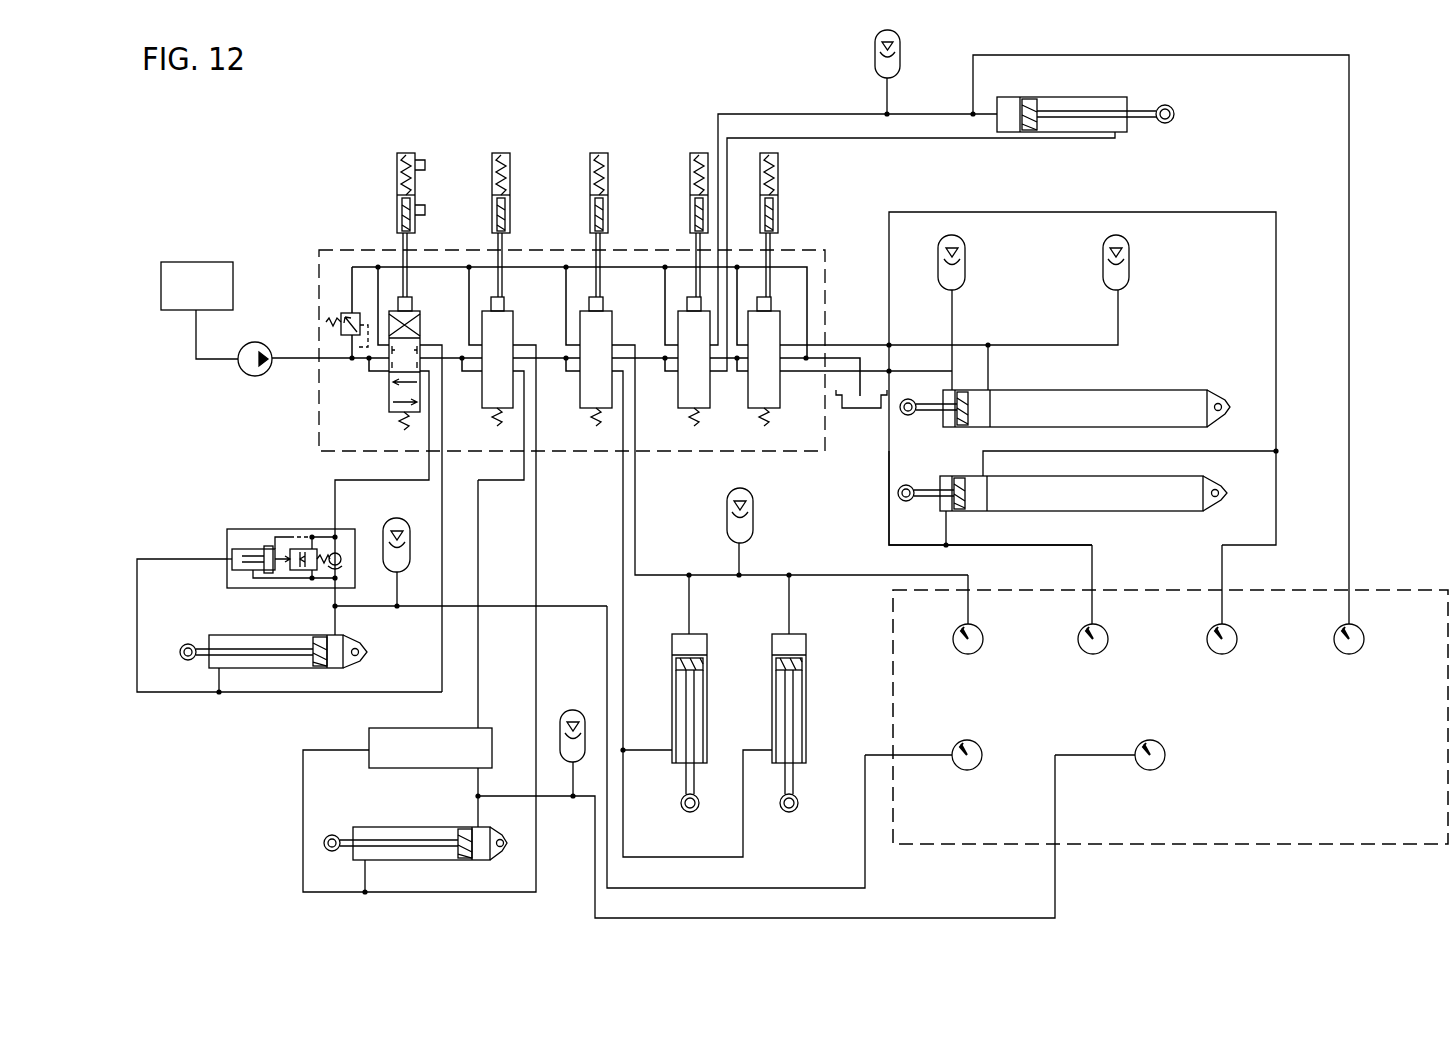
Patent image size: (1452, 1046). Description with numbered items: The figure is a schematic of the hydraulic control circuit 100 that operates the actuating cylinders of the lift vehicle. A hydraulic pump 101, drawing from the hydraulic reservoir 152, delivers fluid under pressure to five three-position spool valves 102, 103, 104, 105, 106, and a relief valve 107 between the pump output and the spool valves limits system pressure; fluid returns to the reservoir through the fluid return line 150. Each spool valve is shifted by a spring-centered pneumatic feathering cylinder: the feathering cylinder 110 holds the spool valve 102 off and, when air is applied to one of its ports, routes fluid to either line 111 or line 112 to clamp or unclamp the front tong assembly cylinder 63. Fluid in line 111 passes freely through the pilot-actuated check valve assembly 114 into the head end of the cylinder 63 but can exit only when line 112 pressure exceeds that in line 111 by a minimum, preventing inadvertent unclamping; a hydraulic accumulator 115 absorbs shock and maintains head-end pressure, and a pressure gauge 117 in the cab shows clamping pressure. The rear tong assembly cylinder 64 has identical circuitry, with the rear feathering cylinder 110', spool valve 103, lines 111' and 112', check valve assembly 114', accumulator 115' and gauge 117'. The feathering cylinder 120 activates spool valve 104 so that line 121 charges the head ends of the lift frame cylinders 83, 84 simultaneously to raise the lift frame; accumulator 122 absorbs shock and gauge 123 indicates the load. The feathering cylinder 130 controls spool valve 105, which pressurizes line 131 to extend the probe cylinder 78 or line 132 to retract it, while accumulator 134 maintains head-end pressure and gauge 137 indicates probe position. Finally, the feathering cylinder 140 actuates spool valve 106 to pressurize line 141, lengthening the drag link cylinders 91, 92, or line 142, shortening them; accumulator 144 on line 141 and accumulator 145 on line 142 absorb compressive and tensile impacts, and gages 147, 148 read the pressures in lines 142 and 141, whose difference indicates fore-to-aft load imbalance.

The front tong assembly cylinder 63 is at (231, 634).
The rear tong assembly cylinder 64 is at (382, 827).
The probe cylinder 78 is at (1038, 96).
The lift frame cylinder 83 is at (708, 693).
The lift frame cylinder 84 is at (807, 684).
The drag link cylinder 91 is at (1120, 426).
The drag link cylinder 92 is at (1178, 511).
The control circuit 100 is at (356, 154).
The hydraulic pump 101 is at (246, 373).
The three-position hydraulic spool valve 102 is at (389, 402).
The spool valve 103 is at (482, 402).
The hydraulic spool valve 104 is at (580, 402).
The three-position hydraulic spool valve 105 is at (678, 398).
The hydraulic spool valve 106 is at (748, 398).
The relief valve 107 is at (341, 318).
The feathering cylinder 110 is at (429, 201).
The rear feathering cylinder 110' is at (526, 194).
The line 111 is at (344, 503).
The line 111' is at (420, 618).
The line 112 is at (474, 518).
The line 112' is at (665, 614).
The pilot-actuated check valve assembly 114 is at (255, 540).
The pilot-actuated check valve assembly 114' is at (446, 599).
The hydraulic accumulator 115 is at (376, 546).
The hydraulic accumulator 115' is at (566, 727).
The pressure gauge 117 is at (825, 747).
The pressure gauge 117' is at (855, 817).
The feathering cylinder 120 is at (609, 180).
The line 121 is at (636, 515).
The hydraulic accumulator 122 is at (753, 537).
The pressure gauge 123 is at (982, 630).
The pneumatic feathering cylinder 130 is at (690, 172).
The line 131 is at (748, 108).
The line 132 is at (903, 140).
The hydraulic accumulator 134 is at (874, 62).
The pressure gauge 137 is at (1363, 628).
The feathering cylinder 140 is at (779, 168).
The line 141 is at (845, 343).
The line 142 is at (889, 503).
The hydraulic accumulator 144 is at (1130, 262).
The hydraulic accumulator 145 is at (967, 258).
The pressure gage 147 is at (1107, 630).
The pressure gage 148 is at (1236, 630).
The fluid return line 150 is at (863, 388).
The hydraulic reservoir 152 is at (198, 262).